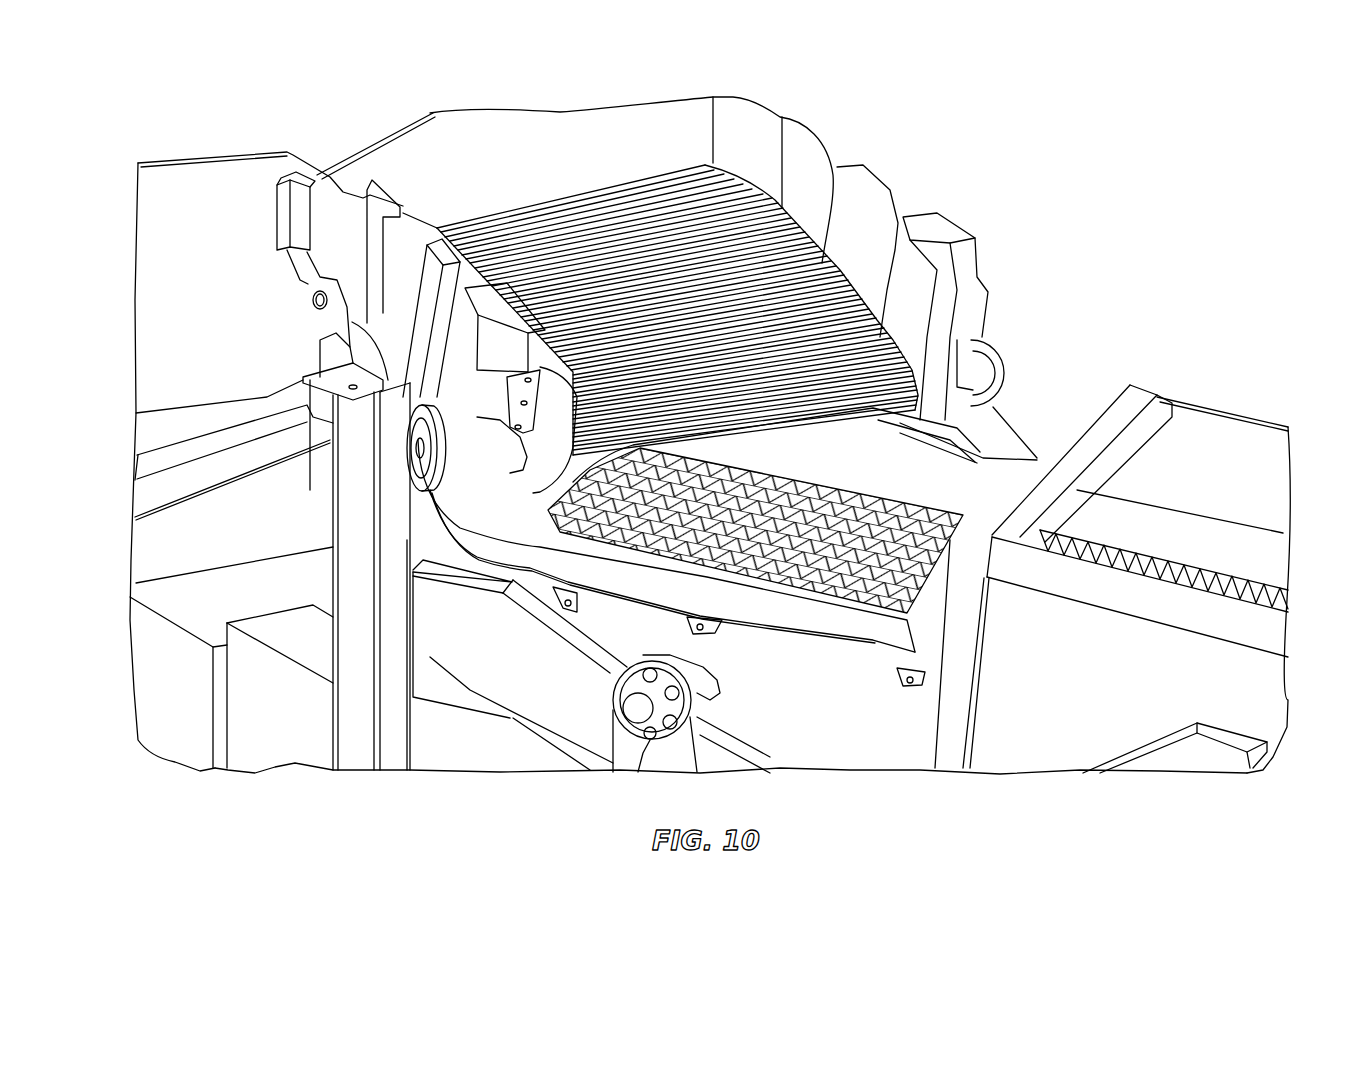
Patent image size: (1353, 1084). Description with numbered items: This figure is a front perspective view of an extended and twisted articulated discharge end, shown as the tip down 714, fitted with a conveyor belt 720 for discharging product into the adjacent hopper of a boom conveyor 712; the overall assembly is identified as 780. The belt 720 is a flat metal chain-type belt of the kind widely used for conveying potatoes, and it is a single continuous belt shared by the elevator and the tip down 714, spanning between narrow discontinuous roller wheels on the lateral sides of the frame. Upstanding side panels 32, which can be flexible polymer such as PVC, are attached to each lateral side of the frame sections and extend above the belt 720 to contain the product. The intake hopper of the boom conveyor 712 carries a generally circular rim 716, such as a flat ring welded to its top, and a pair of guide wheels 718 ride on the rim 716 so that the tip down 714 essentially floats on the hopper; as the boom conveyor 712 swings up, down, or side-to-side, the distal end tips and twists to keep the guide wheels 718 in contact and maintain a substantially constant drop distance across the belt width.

The feed assembly 780 is at (618, 100).
The conveyor belt 720 is at (722, 285).
The guide wheels 718 is at (417, 451).
The rim 716 is at (633, 582).
The tip down 714 is at (950, 196).
The side panels 32 is at (920, 289).
The boom conveyor 712 is at (1142, 382).